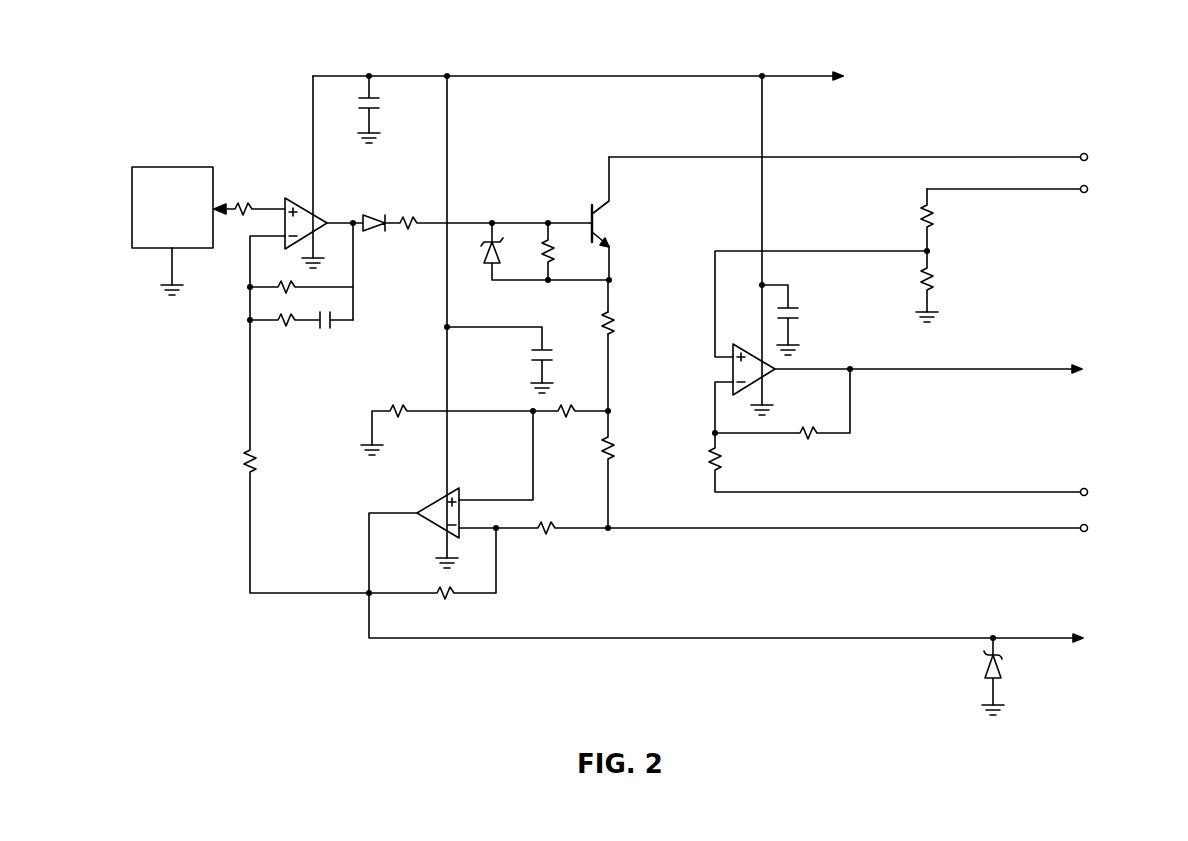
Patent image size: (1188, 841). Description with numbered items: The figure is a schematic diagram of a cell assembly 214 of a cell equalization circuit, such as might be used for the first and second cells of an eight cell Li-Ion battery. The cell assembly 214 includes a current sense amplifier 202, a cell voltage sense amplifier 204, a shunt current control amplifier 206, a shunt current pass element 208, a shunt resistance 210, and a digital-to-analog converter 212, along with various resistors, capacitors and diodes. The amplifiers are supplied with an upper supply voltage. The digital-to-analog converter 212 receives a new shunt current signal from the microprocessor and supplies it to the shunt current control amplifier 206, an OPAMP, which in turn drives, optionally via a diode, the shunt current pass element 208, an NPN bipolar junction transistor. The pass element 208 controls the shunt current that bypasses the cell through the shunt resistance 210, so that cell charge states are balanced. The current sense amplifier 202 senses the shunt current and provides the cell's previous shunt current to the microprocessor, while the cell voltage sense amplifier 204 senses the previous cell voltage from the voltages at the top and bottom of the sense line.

The cell assembly 214 is at (149, 65).
The digital-to-analog converter 212 is at (170, 166).
The shunt current control amplifier 206 is at (329, 199).
The shunt current pass element 208 is at (612, 220).
The shunt resistance 210 is at (620, 319).
The cell voltage sense amplifier 204 is at (862, 400).
The current sense amplifier 202 is at (511, 565).